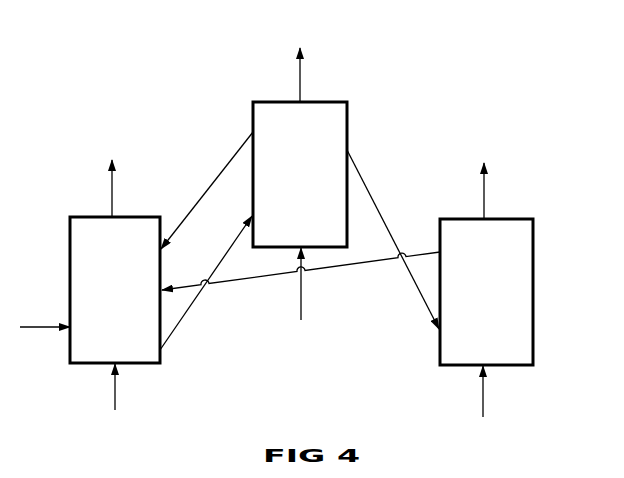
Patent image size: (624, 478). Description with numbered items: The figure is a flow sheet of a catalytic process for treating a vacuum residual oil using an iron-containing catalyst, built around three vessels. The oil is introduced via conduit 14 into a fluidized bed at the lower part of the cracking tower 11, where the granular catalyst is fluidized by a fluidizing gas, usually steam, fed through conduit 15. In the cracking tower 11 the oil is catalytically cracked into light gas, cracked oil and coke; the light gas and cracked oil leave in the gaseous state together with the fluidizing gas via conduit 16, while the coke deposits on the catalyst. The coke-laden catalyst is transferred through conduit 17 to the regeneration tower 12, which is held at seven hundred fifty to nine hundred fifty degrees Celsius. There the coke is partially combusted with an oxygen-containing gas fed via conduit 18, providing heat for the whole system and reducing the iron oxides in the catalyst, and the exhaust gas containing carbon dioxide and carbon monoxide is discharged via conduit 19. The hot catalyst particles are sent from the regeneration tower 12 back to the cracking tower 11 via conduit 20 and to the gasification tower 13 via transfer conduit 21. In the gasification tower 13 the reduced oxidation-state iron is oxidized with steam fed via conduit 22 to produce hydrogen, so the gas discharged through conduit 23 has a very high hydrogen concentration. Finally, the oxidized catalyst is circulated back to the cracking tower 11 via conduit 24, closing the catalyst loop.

The cracking tower 11 is at (69, 233).
The regeneration tower 12 is at (346, 128).
The gasification tower 13 is at (534, 250).
The conduit 14 is at (42, 326).
The conduit 15 is at (116, 393).
The conduit 16 is at (113, 193).
The conduit 17 is at (226, 252).
The conduit 18 is at (302, 306).
The conduit 19 is at (301, 83).
The conduit 20 is at (199, 199).
The transfer conduit 21 is at (374, 200).
The conduit 22 is at (485, 395).
The conduit 23 is at (485, 199).
The conduit 24 is at (381, 262).